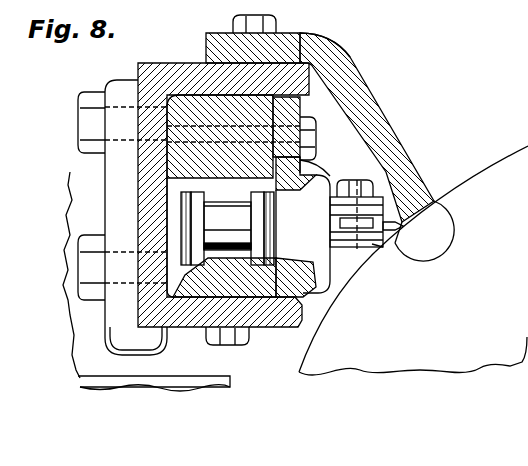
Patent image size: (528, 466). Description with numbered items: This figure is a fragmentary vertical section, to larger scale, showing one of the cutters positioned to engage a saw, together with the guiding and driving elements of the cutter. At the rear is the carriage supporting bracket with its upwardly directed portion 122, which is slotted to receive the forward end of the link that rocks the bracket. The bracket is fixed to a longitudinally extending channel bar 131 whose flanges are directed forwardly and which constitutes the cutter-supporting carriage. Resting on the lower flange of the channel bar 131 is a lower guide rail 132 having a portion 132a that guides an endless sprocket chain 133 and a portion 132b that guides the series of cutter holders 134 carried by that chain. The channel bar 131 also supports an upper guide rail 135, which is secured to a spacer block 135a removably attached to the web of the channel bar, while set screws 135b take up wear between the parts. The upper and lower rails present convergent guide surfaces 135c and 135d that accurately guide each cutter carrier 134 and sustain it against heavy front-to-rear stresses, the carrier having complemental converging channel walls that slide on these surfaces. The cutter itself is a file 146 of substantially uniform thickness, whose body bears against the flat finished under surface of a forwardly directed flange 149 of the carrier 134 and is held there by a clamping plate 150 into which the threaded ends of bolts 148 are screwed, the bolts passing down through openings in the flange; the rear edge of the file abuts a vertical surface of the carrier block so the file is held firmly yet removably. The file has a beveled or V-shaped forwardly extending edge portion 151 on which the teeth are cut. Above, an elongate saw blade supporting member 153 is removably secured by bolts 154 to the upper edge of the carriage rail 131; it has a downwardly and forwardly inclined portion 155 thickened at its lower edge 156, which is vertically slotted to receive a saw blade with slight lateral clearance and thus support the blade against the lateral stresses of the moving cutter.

The upwardly directed portion 122 is at (76, 175).
The channel bar 131 is at (148, 74).
The lower guide rail 132 is at (283, 291).
The portion of lower guide rail 132a is at (183, 328).
The portion of lower guide rail 132b is at (318, 296).
The endless sprocket chain 133 is at (227, 226).
The cutter holder 134 is at (255, 236).
The upper guide rail 135 is at (287, 107).
The spacer block 135a is at (198, 108).
The set screws 135b is at (310, 34).
The convergent guide surface 135c is at (287, 191).
The convergent guide surface 135d is at (310, 171).
The file 146 is at (372, 245).
The bolts 148 is at (356, 184).
The forwardly directed flange 149 is at (420, 166).
The clamping plate 150 is at (350, 249).
The beveled edge portion 151 is at (402, 227).
The elongate member 153 is at (219, 32).
The bolts 154 is at (274, 20).
The inclined portion 155 is at (350, 63).
The thickened lower edge 156 is at (454, 214).